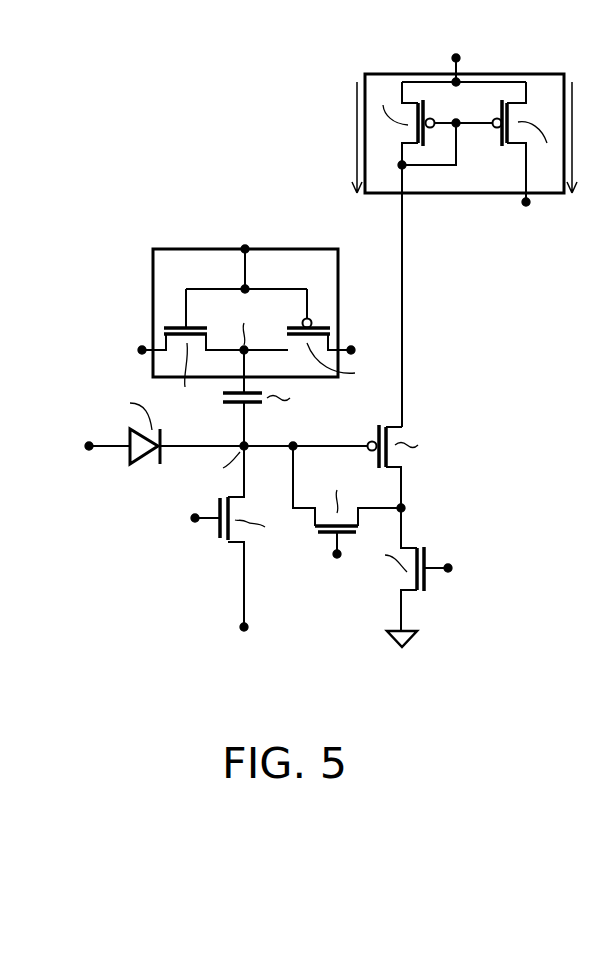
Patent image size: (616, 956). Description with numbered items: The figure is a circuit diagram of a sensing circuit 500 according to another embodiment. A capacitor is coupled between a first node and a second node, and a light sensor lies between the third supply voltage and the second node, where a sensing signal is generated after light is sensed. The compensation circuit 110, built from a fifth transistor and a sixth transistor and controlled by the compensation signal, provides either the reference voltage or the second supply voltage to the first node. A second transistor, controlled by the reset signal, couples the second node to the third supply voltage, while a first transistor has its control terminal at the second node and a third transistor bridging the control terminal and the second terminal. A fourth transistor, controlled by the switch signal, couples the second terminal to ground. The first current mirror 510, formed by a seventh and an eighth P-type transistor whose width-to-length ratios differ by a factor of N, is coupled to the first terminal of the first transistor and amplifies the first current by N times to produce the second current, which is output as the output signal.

The sensing circuit 500 is at (167, 693).
The compensation circuit 110 is at (197, 282).
The first current mirror 510 is at (510, 186).